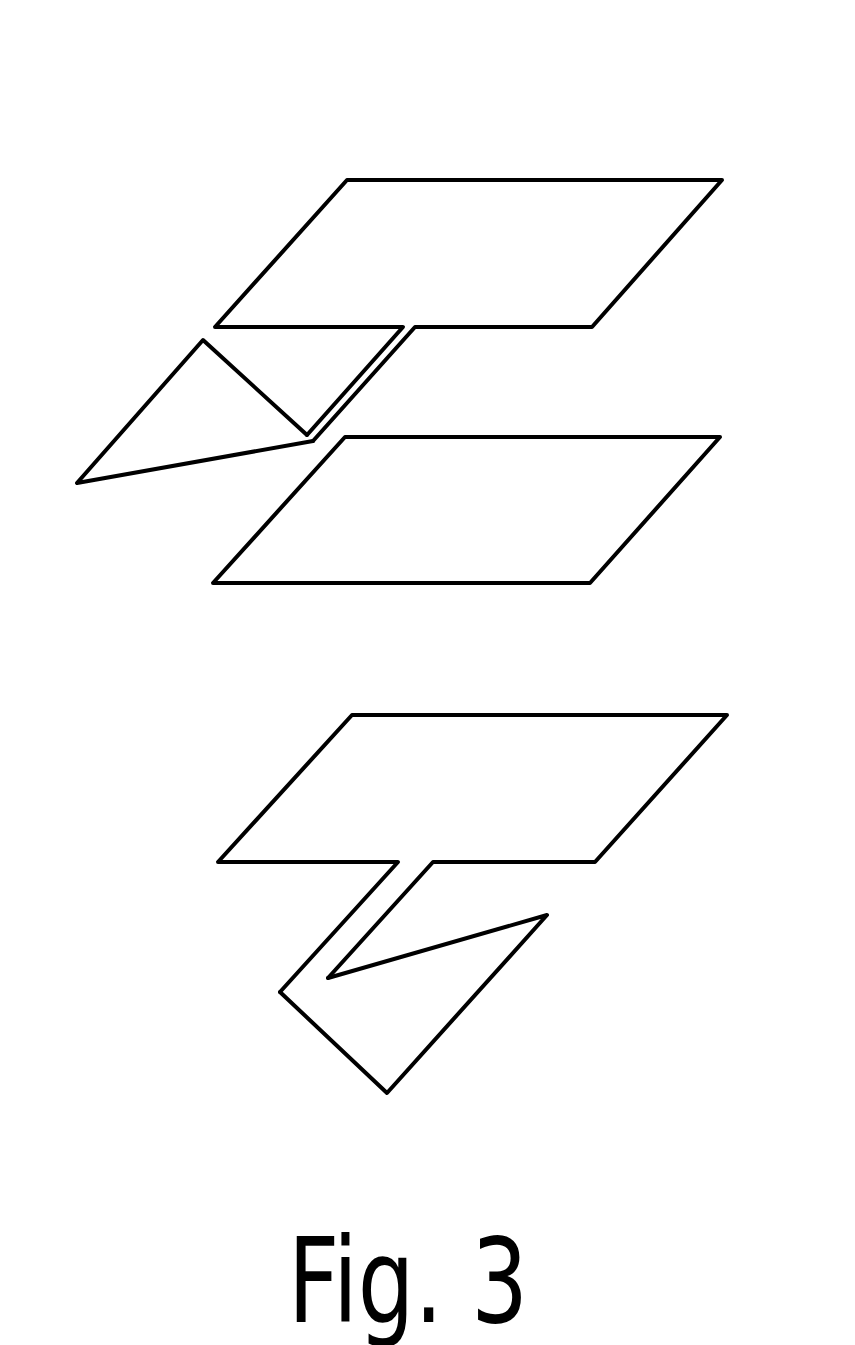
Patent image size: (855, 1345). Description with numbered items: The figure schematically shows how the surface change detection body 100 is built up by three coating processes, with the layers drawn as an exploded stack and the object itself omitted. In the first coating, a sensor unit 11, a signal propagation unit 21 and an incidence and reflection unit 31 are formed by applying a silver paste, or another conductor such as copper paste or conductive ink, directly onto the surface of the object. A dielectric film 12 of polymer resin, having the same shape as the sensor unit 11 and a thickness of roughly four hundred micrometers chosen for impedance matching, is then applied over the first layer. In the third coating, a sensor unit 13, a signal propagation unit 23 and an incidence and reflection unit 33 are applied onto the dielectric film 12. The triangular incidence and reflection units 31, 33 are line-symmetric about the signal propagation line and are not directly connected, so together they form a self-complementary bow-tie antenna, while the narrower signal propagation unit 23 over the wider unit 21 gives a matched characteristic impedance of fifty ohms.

The surface change detection body 100 is at (485, 111).
The sensor unit of first layer 11 is at (648, 778).
The dielectric film 12 is at (623, 513).
The sensor unit of third layer 13 is at (650, 240).
The signal propagation unit of first layer 21 is at (360, 920).
The signal propagation unit of third layer 23 is at (380, 370).
The incidence and reflection unit of first layer 31 is at (467, 988).
The incidence and reflection unit of third layer 33 is at (177, 398).